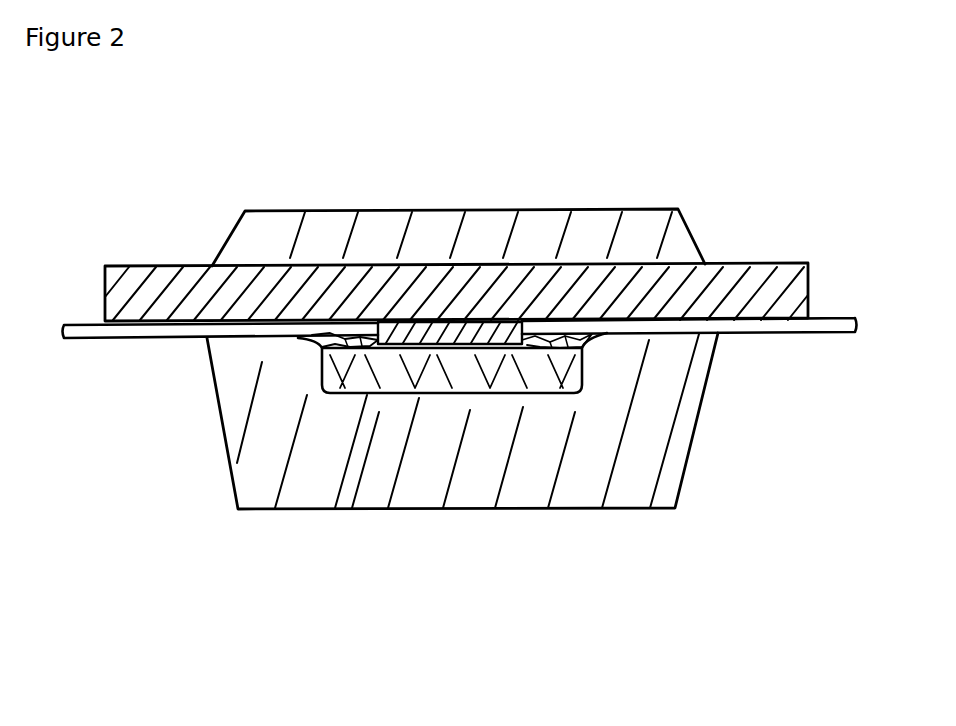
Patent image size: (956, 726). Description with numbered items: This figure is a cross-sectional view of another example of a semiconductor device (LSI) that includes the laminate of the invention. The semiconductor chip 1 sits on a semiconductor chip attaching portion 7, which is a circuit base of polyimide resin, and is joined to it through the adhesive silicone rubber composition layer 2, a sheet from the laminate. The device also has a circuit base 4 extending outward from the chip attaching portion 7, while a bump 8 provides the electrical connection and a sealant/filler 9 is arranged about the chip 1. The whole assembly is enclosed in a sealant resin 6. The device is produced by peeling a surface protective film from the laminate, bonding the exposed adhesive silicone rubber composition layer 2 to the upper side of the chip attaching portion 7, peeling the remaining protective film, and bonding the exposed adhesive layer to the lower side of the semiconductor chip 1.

The semiconductor chip 1 is at (492, 340).
The adhesive silicone rubber composition layer 2 is at (412, 370).
The circuit base 4 is at (716, 327).
The sealant resin 6 is at (585, 473).
The semiconductor chip attaching portion 7 is at (395, 283).
The bump 8 is at (565, 340).
The sealant/filler 9 is at (365, 345).